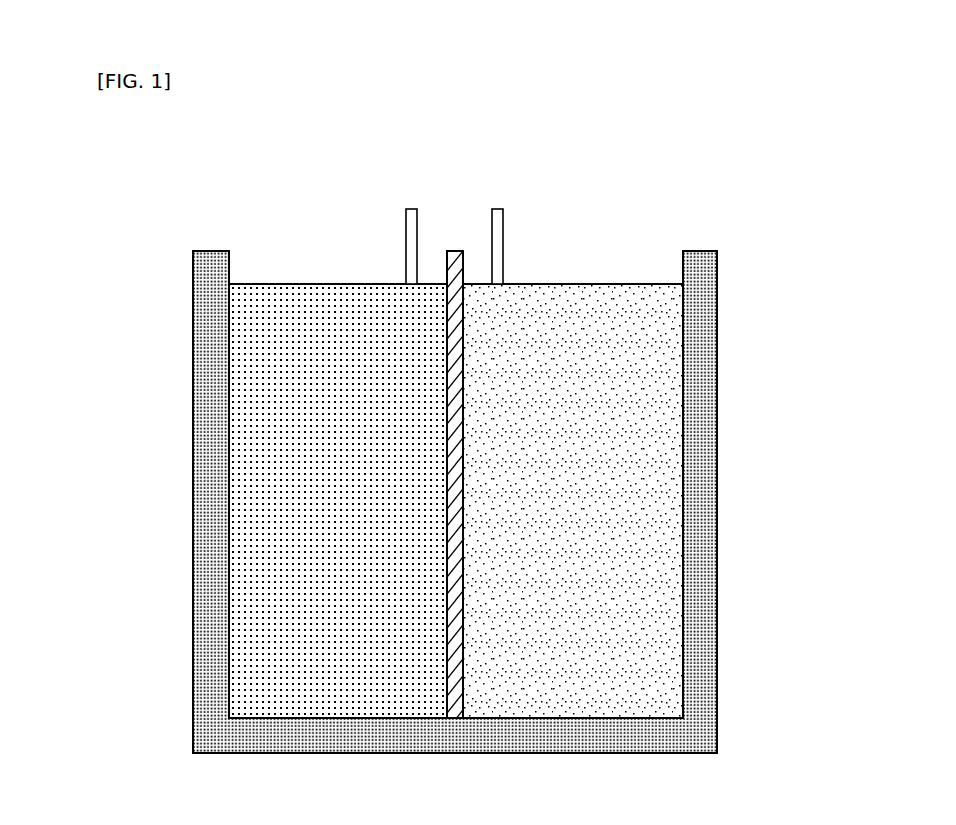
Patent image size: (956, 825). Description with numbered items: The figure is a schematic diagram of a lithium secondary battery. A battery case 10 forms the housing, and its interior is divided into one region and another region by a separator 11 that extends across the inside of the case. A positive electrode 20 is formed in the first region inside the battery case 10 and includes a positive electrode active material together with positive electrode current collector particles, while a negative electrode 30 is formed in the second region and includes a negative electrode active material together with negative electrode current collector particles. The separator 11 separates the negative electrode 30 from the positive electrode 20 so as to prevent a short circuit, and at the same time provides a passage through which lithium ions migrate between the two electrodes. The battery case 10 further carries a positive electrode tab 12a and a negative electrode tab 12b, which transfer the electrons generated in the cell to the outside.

The battery case 10 is at (703, 462).
The separator 11 is at (456, 253).
The positive electrode tab 12a is at (411, 214).
The negative electrode tab 12b is at (498, 214).
The positive electrode 20 is at (323, 293).
The negative electrode 30 is at (598, 295).